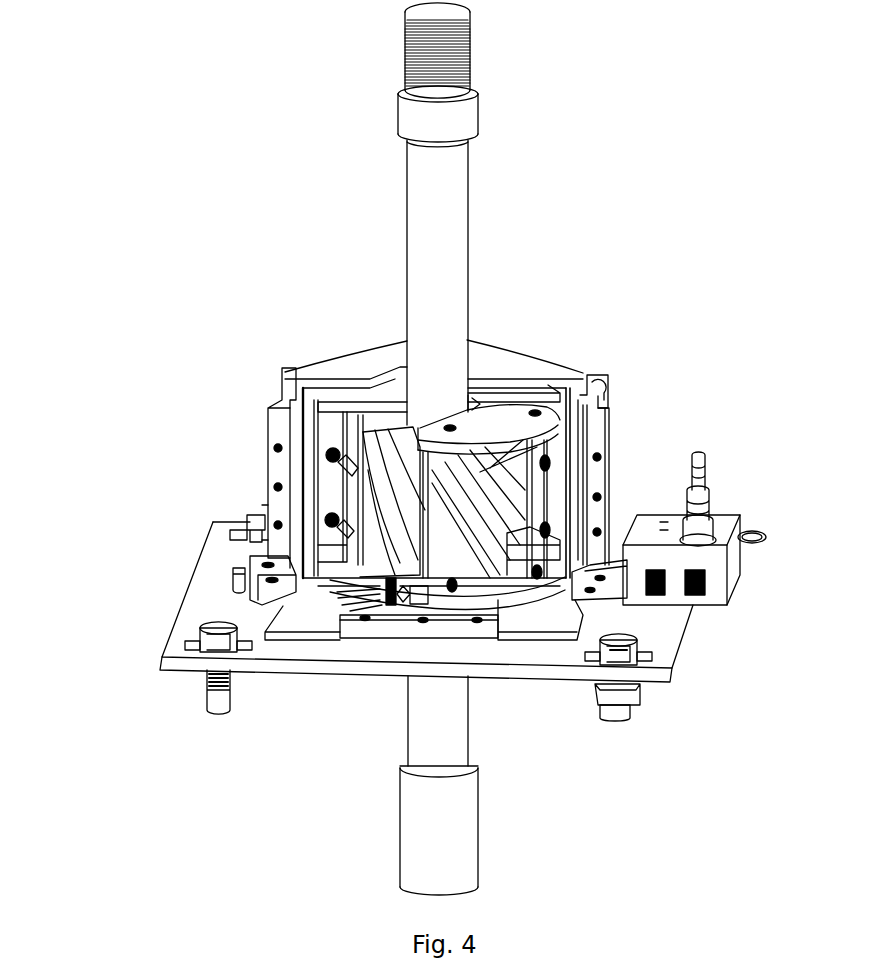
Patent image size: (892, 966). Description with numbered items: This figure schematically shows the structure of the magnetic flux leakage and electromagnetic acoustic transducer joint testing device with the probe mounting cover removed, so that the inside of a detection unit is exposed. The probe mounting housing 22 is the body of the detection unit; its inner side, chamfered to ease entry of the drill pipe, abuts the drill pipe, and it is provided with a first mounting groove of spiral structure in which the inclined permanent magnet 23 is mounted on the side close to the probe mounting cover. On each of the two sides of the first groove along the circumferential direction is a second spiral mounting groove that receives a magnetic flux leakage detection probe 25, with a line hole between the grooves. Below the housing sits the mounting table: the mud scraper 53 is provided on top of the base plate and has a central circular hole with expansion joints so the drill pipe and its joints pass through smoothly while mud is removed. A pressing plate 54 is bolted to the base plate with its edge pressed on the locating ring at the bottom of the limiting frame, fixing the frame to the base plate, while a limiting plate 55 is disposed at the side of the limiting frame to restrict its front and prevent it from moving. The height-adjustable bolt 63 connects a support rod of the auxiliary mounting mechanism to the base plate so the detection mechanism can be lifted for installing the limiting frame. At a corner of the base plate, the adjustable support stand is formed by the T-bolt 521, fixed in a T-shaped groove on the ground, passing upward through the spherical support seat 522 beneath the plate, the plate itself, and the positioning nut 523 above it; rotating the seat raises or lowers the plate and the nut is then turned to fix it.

The probe mounting housing 22 is at (497, 413).
The inclined permanent magnet 23 is at (478, 472).
The magnetic flux leakage detection probe 25 is at (445, 523).
The mud scraper 53 is at (536, 625).
The pressing plate 54 is at (392, 633).
The limiting plate 55 is at (300, 588).
The height-adjustable bolt 63 is at (233, 573).
The T-bolt 521 is at (623, 717).
The spherical support seat 522 is at (618, 692).
The positioning nut 523 is at (650, 652).